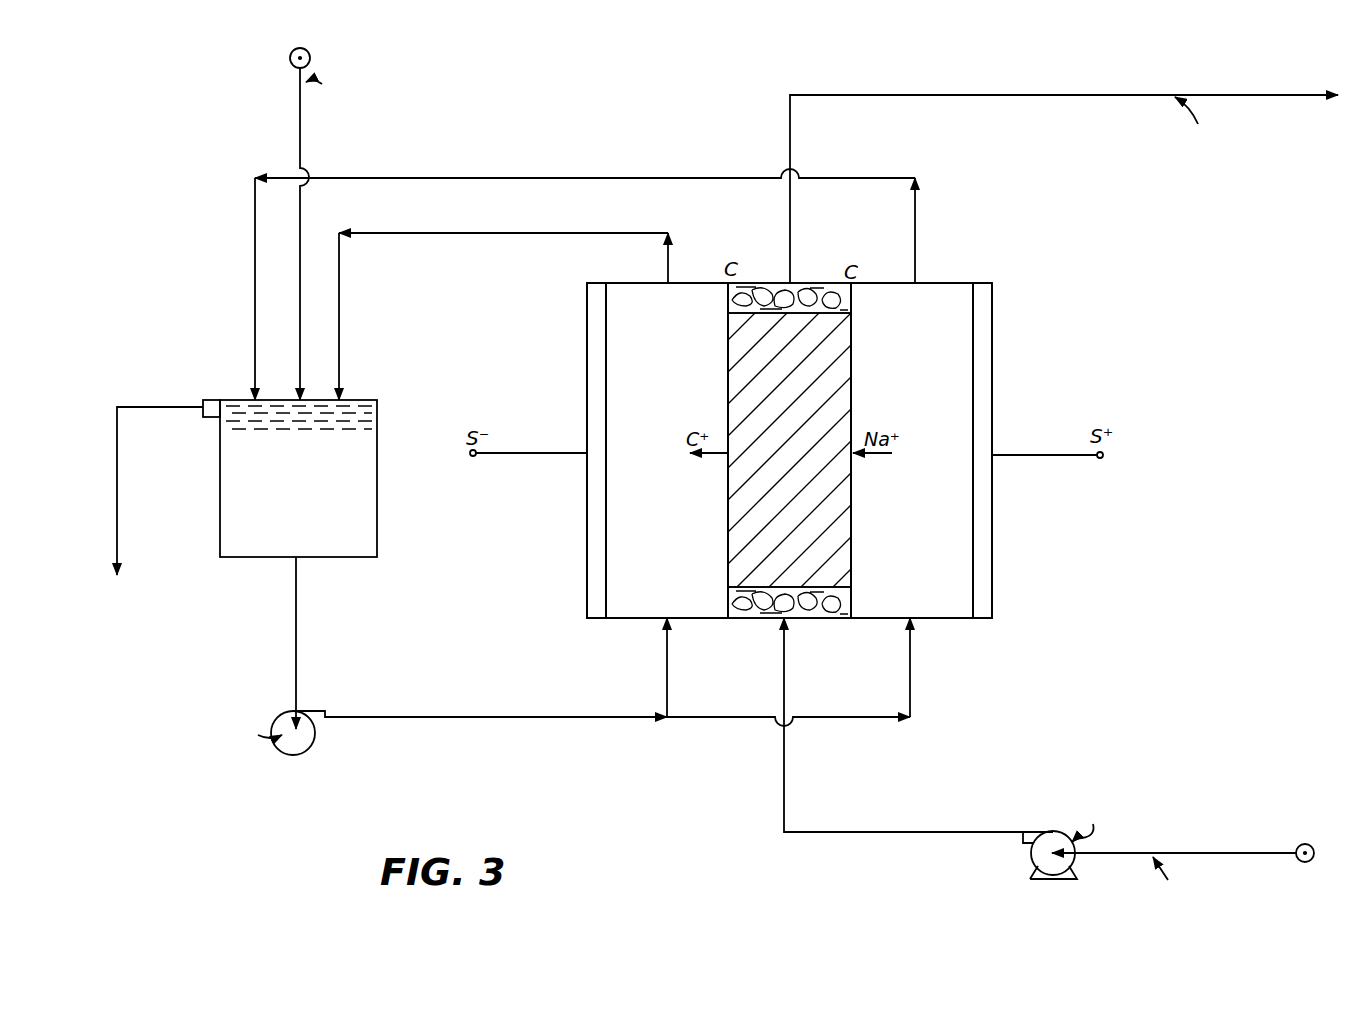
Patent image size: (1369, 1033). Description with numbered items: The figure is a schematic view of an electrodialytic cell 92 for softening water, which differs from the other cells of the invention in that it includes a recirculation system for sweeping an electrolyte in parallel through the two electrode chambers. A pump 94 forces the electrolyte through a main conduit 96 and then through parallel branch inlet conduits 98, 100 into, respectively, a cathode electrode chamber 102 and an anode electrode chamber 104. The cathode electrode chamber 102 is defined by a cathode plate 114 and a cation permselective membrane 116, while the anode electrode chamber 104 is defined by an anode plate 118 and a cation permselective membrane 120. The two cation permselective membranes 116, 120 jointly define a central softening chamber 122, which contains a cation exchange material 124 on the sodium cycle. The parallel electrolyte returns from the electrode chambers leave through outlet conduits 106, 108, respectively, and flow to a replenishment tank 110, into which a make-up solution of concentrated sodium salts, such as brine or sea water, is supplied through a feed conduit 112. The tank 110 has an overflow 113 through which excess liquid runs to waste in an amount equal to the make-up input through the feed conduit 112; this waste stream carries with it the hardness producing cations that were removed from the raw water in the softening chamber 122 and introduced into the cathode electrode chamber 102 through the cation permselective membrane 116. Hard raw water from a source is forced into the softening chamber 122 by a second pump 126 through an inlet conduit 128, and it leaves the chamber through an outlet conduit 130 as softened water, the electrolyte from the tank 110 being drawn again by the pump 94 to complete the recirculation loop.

The electrodialytic cell 92 is at (1082, 568).
The pump 94 is at (298, 754).
The main conduit 96 is at (497, 718).
The branch inlet conduit 98 is at (667, 680).
The branch inlet conduit 100 is at (910, 688).
The cathode electrode chamber 102 is at (621, 572).
The anode electrode chamber 104 is at (952, 602).
The outlet conduit 106 is at (470, 236).
The outlet conduit 108 is at (605, 176).
The replenishment tank 110 is at (377, 550).
The feed conduit 112 is at (298, 137).
The overflow 113 is at (115, 501).
The cathode plate 114 is at (587, 531).
The cation permselective membrane 116 is at (728, 512).
The anode plate 118 is at (992, 553).
The cation permselective membrane 120 is at (851, 528).
The softening chamber 122 is at (746, 620).
The cation exchange material 124 is at (838, 371).
The pump 126 is at (1049, 881).
The inlet conduit 128 is at (879, 834).
The outlet conduit 130 is at (1013, 97).